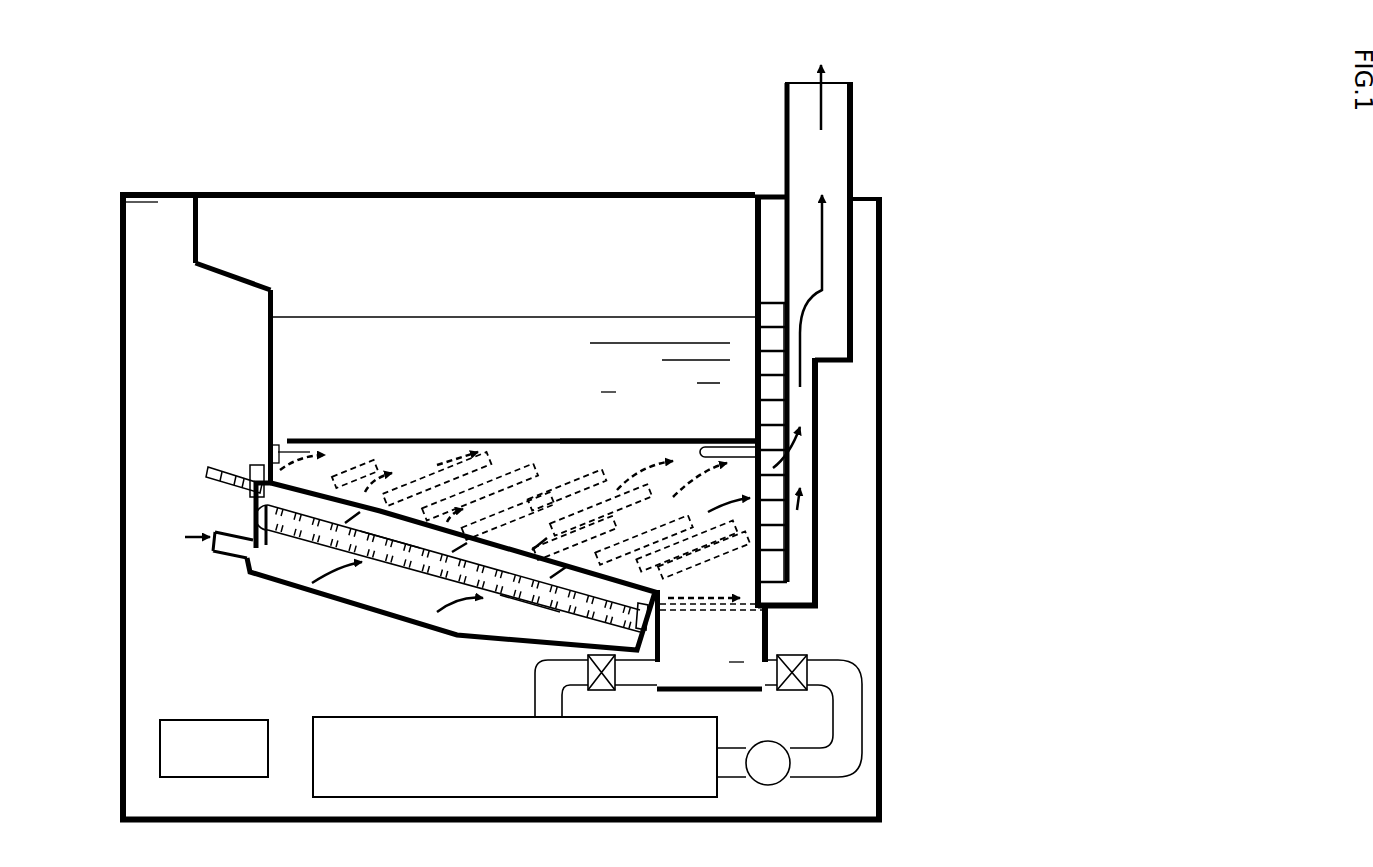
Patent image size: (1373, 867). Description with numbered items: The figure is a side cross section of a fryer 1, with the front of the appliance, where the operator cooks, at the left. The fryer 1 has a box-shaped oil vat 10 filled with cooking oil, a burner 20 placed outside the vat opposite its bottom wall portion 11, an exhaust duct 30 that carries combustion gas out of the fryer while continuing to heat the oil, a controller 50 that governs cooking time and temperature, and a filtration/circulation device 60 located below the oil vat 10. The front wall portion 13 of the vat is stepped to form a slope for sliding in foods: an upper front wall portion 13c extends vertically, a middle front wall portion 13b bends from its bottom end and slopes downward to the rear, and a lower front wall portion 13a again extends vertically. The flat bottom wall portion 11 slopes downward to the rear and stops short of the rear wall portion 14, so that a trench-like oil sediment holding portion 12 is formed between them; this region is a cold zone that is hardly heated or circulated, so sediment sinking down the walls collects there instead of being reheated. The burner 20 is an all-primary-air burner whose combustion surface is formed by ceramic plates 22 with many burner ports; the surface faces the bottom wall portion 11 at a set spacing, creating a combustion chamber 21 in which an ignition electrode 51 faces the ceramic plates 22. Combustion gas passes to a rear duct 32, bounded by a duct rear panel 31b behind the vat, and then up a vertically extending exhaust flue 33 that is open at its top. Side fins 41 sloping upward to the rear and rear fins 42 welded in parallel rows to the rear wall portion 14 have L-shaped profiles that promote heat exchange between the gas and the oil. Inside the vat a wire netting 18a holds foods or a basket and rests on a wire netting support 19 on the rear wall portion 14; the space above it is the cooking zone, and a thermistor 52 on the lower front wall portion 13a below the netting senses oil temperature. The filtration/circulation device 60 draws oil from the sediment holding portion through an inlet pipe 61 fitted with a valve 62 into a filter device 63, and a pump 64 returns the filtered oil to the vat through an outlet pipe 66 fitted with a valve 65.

The fryer 1 is at (494, 183).
The oil vat 10 is at (190, 218).
The bottom wall portion 11 is at (393, 535).
The oil sediment holding portion 12 is at (768, 632).
The front wall portion 13 is at (202, 340).
The lower front wall portion 13a is at (268, 358).
The middle front wall portion 13b is at (238, 290).
The upper front wall portion 13c is at (195, 263).
The rear wall portion 14 is at (768, 232).
The wire netting 18a is at (622, 437).
The wire netting support 19 is at (705, 452).
The burner 20 is at (256, 578).
The combustion chamber 21 is at (423, 545).
The ceramic plates 22 is at (522, 572).
The exhaust duct 30 is at (826, 392).
The duct rear panel 31b is at (737, 615).
The rear duct 32 is at (818, 500).
The exhaust flue 33 is at (853, 138).
The side fins 41 is at (493, 467).
The rear fins 42 is at (778, 542).
The controller 50 is at (218, 717).
The ignition electrode 51 is at (232, 472).
The thermistor 52 is at (296, 436).
The filtration/circulation device 60 is at (428, 700).
The inlet pipe 61 is at (637, 655).
The valve 62 is at (600, 690).
The filter device 63 is at (490, 715).
The pump 64 is at (762, 741).
The valve 65 is at (797, 693).
The outlet pipe 66 is at (767, 688).